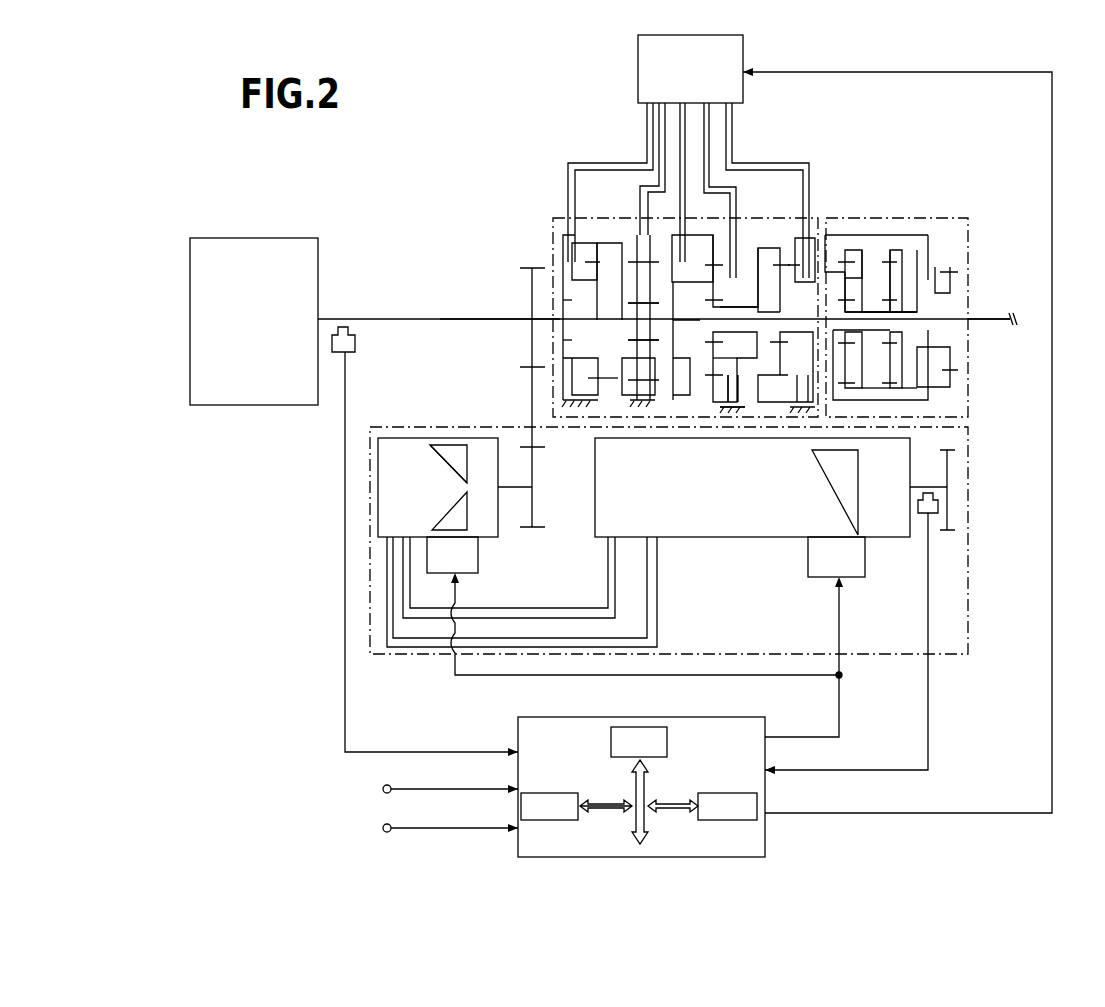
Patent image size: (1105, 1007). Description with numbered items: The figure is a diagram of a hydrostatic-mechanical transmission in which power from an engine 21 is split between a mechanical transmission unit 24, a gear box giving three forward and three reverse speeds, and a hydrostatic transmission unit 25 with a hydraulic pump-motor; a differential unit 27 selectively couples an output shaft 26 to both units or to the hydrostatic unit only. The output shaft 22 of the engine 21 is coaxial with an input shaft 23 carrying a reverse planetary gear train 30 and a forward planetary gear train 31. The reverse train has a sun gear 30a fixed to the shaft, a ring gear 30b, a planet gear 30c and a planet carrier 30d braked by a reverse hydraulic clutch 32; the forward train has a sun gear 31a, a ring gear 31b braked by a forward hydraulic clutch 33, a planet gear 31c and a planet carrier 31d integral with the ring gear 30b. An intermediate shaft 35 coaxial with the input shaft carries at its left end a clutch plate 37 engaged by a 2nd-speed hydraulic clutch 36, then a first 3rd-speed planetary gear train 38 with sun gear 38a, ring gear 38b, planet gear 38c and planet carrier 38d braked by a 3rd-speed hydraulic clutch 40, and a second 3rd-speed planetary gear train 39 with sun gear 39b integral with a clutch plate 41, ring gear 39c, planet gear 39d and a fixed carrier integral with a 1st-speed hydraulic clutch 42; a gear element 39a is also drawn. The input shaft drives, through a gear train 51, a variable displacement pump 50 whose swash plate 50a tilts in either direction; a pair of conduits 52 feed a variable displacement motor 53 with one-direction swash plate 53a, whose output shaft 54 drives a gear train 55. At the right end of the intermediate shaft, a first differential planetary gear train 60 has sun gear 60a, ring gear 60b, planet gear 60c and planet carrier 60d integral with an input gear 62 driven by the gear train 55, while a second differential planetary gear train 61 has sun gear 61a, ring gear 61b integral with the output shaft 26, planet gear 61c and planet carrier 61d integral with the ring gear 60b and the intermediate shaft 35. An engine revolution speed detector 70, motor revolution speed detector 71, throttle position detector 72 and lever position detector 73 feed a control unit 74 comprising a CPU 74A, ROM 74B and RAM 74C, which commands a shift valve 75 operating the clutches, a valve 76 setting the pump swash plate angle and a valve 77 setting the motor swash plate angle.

The engine 21 is at (298, 238).
The output shaft of the engine 22 is at (367, 319).
The input shaft 23 is at (486, 319).
The mechanical transmission unit 24 is at (553, 218).
The hydrostatic transmission unit 25 is at (968, 570).
The output shaft 26 is at (983, 322).
The differential unit 27 is at (960, 218).
The reverse planetary gear train 30 is at (574, 236).
The sun gear 30a is at (598, 334).
The ring gear 30b is at (564, 402).
The planet gear 30c is at (598, 298).
The planet carrier 30d is at (562, 358).
The forward planetary gear train 31 is at (647, 162).
The sun gear 31a is at (645, 339).
The ring gear 31b is at (646, 402).
The planet gear 31c is at (648, 298).
The planet carrier 31d is at (564, 380).
The reverse hydraulic clutch 32 is at (580, 246).
The forward hydraulic clutch 33 is at (644, 222).
The intermediate shaft 35 is at (692, 320).
The 2nd-speed hydraulic clutch 36 is at (682, 235).
The clutch plate 37 is at (680, 280).
The first 3rd-speed planetary gear train 38 is at (732, 235).
The sun gear 38a is at (687, 380).
The ring gear 38b is at (722, 420).
The planet gear 38c is at (713, 400).
The planet carrier 38d is at (718, 360).
The second 3rd-speed planetary gear train 39 is at (809, 235).
The clutch gear 39a is at (812, 420).
The sun gear 39b is at (788, 306).
The ring gear 39c is at (798, 400).
The planet gear 39d is at (774, 380).
The 3rd-speed hydraulic clutch 40 is at (738, 245).
The clutch plate 41 is at (788, 293).
The 1st-speed hydraulic clutch 42 is at (790, 238).
The variable displacement pump 50 is at (378, 475).
The discharge controlling variable-angle swash plate 50a is at (439, 446).
The gear train 51 is at (546, 397).
The pair of conduits 52 is at (540, 608).
The variable displacement motor 53 is at (727, 543).
The discharge controlling variable-angle swash plate 53a is at (834, 477).
The output shaft 54 is at (930, 490).
The gear train 55 is at (938, 482).
The first differential planetary gear train 60 is at (858, 232).
The sun gear 60a is at (864, 268).
The ring gear 60b is at (872, 222).
The planet gear 60c is at (832, 230).
The planet carrier 60d is at (844, 373).
The second differential planetary gear train 61 is at (910, 230).
The sun gear 61a is at (900, 296).
The ring gear 61b is at (934, 405).
The planet gear 61c is at (930, 376).
The planet carrier 61d is at (928, 400).
The input gear 62 is at (950, 272).
The engine revolution speed detector 70 is at (355, 340).
The motor revolution speed detector 71 is at (865, 643).
The throttle position detector 72 is at (383, 789).
The lever position detector 73 is at (383, 828).
The control unit 74 is at (750, 840).
The central processing unit 74A is at (668, 740).
The read only memory 74B is at (554, 792).
The random access memory 74C is at (760, 800).
The shift valve 75 is at (740, 33).
The valve 76 is at (426, 562).
The valve 77 is at (851, 570).